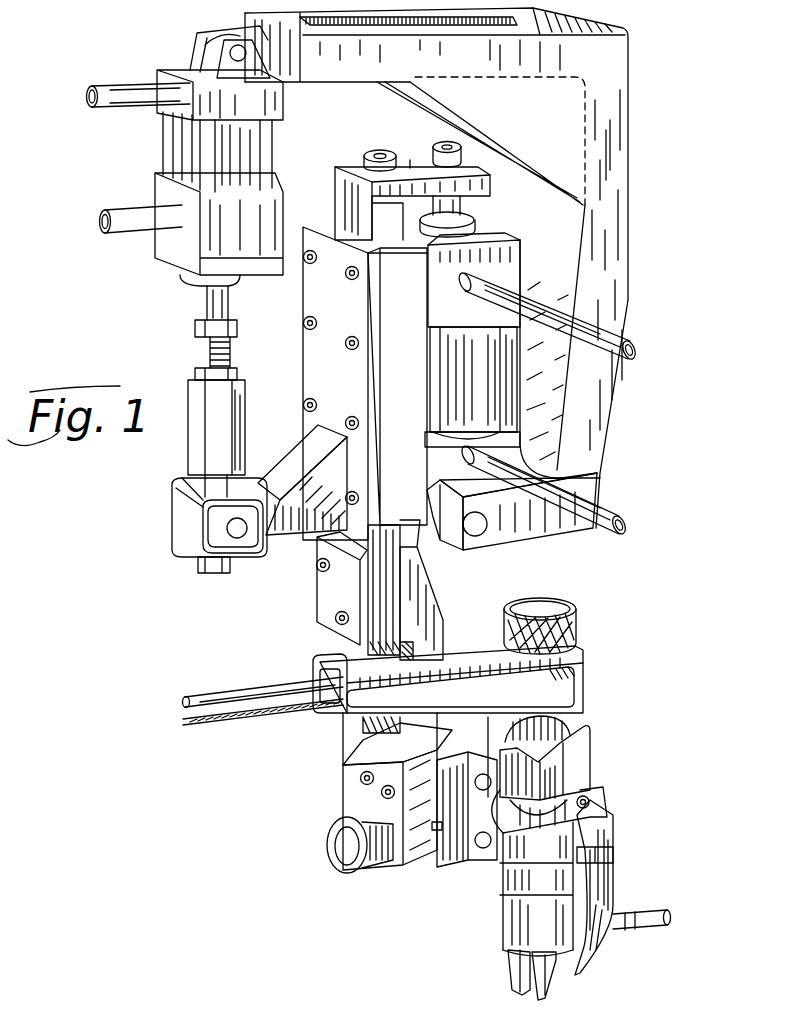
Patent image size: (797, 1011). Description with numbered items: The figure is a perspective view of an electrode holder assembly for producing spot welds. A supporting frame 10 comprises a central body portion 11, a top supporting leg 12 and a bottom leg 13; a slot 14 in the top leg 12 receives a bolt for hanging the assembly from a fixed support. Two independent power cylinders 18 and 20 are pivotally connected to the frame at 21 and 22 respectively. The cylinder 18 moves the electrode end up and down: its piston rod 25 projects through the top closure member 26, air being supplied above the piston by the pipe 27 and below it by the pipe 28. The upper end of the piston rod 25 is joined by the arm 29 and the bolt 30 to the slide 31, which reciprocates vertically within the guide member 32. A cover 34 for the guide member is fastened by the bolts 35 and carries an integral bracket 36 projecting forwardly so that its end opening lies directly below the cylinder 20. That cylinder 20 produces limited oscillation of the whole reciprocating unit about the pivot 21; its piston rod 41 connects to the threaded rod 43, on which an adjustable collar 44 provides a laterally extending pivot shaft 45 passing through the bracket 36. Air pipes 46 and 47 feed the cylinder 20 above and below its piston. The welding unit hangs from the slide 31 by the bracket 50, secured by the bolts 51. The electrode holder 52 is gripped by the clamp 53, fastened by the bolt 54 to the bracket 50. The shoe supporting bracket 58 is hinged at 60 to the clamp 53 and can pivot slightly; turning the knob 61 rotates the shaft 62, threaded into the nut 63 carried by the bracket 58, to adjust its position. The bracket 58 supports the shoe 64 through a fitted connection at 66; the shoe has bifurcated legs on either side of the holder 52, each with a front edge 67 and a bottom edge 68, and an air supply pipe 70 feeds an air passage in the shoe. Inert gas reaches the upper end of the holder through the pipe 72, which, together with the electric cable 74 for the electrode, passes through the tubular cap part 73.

The supporting frame 10 is at (631, 225).
The central body portion 11 is at (618, 278).
The top supporting leg 12 is at (423, 60).
The bottom leg 13 is at (557, 527).
The slot 14 is at (472, 21).
The power cylinder 18 is at (481, 387).
The power cylinder 20 is at (186, 142).
The pivot connection 21 is at (480, 527).
The pivot connection 22 is at (232, 52).
The piston rod 25 is at (465, 213).
The top closure member 26 is at (519, 250).
The pipe 27 is at (620, 328).
The pipe 28 is at (590, 500).
The arm 29 is at (410, 166).
The bolt 30 is at (372, 152).
The slide 31 is at (345, 195).
The guide member 32 is at (398, 293).
The cover 34 is at (320, 353).
The bolts 35 is at (362, 418).
The bracket 36 is at (297, 457).
The piston rod 41 is at (212, 303).
The threaded rod 43 is at (207, 352).
The adjustable collar 44 is at (210, 428).
The pivot shaft 45 is at (226, 525).
The air supply pipe 46 is at (125, 92).
The air supply pipe 47 is at (130, 218).
The bracket 50 is at (423, 607).
The bolts 51 is at (335, 617).
The electrode holder 52 is at (527, 917).
The clamp 53 is at (580, 729).
The bolt 54 is at (381, 793).
The shoe supporting bracket 58 is at (576, 828).
The hinge 60 is at (483, 774).
The knob 61 is at (342, 848).
The shaft 62 is at (432, 828).
The nut 63 is at (478, 848).
The shoe 64 is at (597, 890).
The fitted connection 66 is at (607, 845).
The front edge 67 is at (507, 962).
The bottom edge 68 is at (527, 992).
The air supply pipe 70 is at (645, 908).
The pipe 72 is at (222, 693).
The tubular cap part 73 is at (563, 682).
The electric cable 74 is at (222, 720).